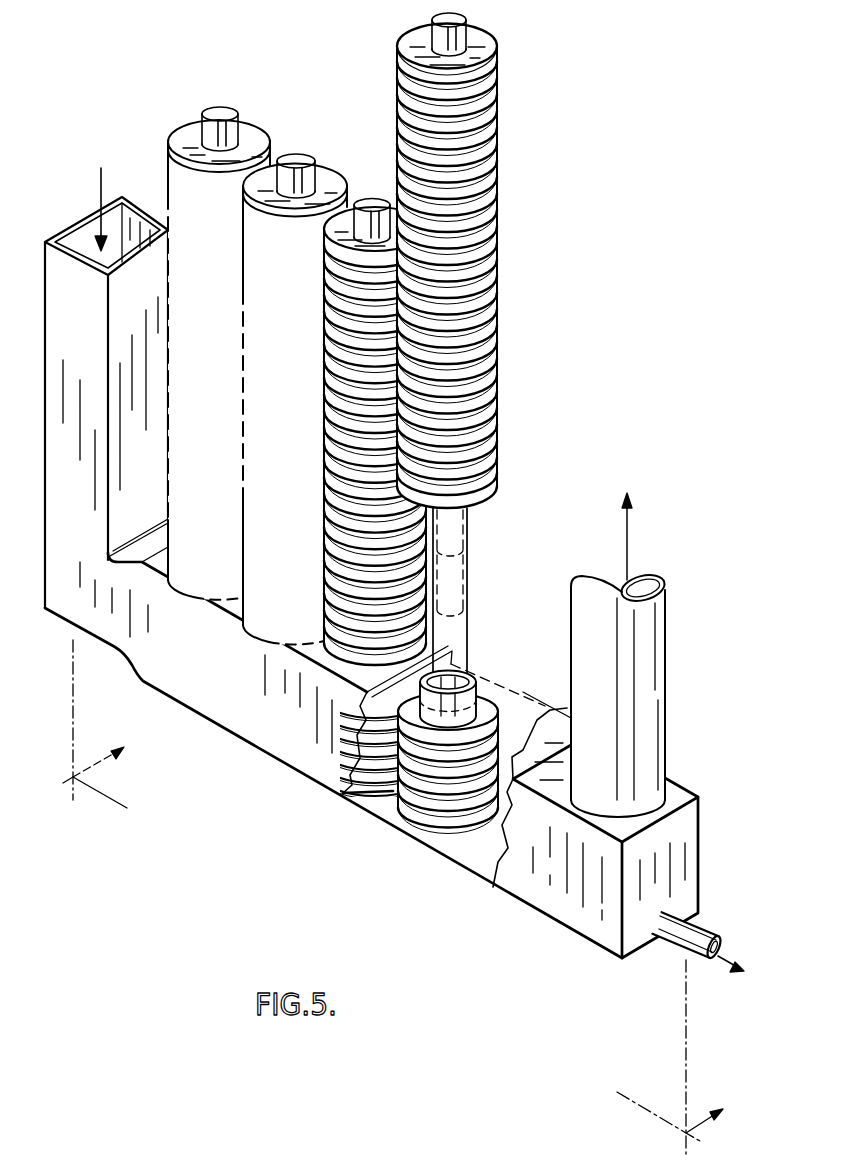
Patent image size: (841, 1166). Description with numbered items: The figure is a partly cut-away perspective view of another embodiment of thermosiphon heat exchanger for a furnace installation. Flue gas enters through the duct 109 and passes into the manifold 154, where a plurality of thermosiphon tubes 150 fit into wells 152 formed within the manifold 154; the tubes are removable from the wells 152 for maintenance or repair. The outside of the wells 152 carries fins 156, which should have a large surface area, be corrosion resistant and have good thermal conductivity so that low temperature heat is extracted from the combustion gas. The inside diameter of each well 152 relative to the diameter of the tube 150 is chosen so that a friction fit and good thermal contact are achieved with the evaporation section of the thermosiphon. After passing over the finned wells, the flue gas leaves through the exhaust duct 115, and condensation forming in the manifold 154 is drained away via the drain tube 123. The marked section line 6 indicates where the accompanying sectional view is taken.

The duct 109 is at (65, 280).
The manifold 154 is at (243, 718).
The fins 156 is at (487, 268).
The thermosiphon tubes 150 is at (452, 527).
The wells 152 is at (479, 674).
The exhaust duct 115 is at (647, 676).
The drain tube 123 is at (680, 940).
The section line 6- 6 is at (386, 898).